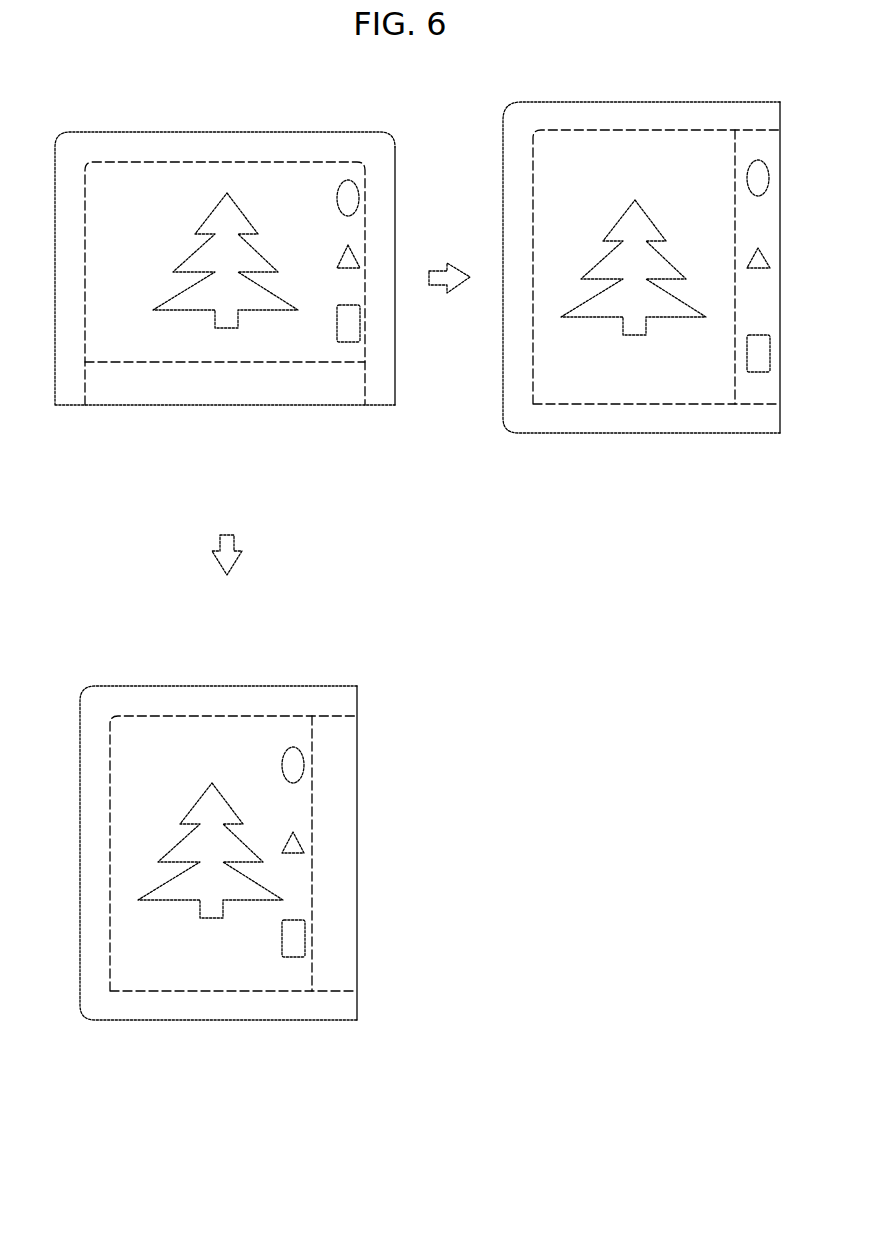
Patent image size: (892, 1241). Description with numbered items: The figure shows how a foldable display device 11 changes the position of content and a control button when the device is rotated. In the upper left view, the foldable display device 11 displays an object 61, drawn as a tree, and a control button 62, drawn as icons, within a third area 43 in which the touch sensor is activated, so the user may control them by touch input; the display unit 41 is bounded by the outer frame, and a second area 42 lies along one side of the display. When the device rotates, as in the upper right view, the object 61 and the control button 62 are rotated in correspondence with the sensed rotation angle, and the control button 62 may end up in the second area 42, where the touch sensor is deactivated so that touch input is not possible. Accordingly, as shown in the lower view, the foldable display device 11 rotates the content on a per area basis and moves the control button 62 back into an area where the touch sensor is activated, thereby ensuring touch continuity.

The foldable display device 11 is at (706, 435).
The display unit 41 is at (148, 149).
The second area 42 is at (164, 389).
The third area 43 is at (289, 182).
The object 61 is at (226, 313).
The control button 62 is at (350, 324).